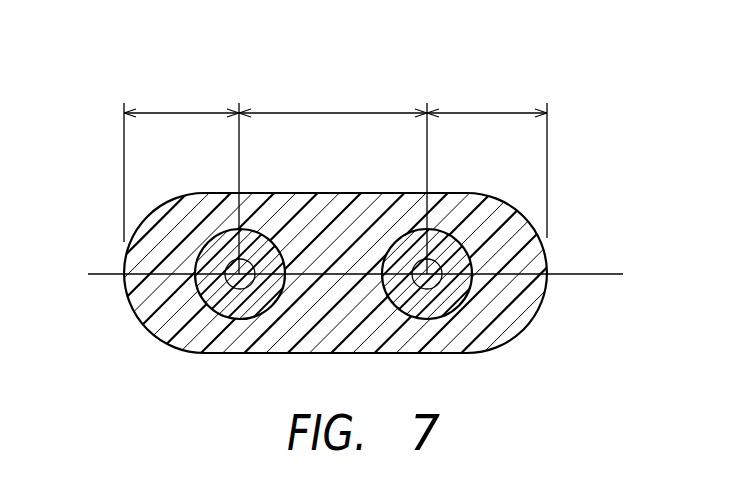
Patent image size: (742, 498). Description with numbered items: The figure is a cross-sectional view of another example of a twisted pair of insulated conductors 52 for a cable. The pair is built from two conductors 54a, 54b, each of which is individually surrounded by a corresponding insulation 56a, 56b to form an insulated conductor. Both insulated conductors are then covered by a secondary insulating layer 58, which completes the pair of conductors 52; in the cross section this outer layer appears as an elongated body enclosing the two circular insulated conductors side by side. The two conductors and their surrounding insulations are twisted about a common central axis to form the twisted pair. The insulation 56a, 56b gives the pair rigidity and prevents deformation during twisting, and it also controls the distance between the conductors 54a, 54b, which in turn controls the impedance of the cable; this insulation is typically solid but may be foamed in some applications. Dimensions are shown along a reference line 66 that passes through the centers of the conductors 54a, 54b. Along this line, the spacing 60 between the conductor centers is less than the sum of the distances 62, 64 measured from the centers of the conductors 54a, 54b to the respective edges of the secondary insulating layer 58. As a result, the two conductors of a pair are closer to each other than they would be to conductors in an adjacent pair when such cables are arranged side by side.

The twisted pair of insulated conductors 52 is at (598, 203).
The conductor 54a is at (233, 281).
The conductor 54b is at (420, 282).
The insulation 56a is at (213, 257).
The insulation 56b is at (405, 257).
The secondary insulating layer 58 is at (450, 192).
The spacing 60 is at (355, 112).
The distance 62 is at (185, 113).
The distance 64 is at (497, 113).
The reference line 66 is at (592, 275).